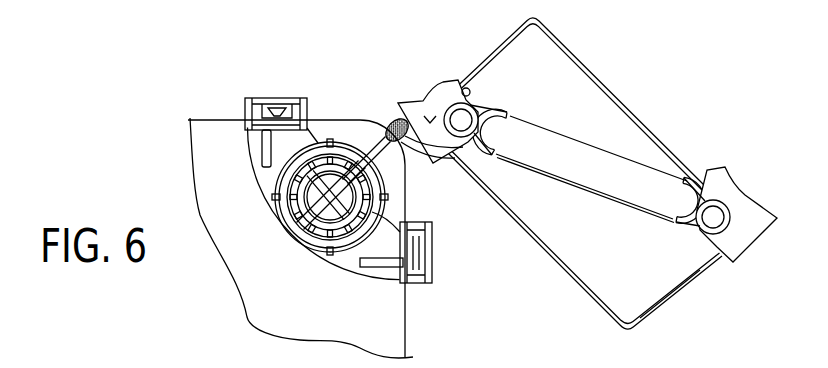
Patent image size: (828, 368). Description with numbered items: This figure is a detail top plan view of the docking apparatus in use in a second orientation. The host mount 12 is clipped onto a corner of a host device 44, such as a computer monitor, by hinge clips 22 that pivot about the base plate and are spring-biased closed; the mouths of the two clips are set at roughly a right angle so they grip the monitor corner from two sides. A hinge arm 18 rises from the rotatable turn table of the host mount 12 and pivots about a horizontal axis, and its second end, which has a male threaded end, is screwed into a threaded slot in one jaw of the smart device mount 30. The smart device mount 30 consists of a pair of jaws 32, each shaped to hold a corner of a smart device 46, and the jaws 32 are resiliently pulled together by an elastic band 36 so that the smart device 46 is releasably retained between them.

The host mount 12 is at (287, 243).
The hinge arm 18 is at (378, 132).
The hinge clip 22 is at (272, 98).
The smart device mount 30 is at (610, 140).
The pair of jaws 32 is at (422, 102).
The band 36 is at (657, 183).
The host device 44 is at (215, 158).
The smart device 46 is at (660, 280).